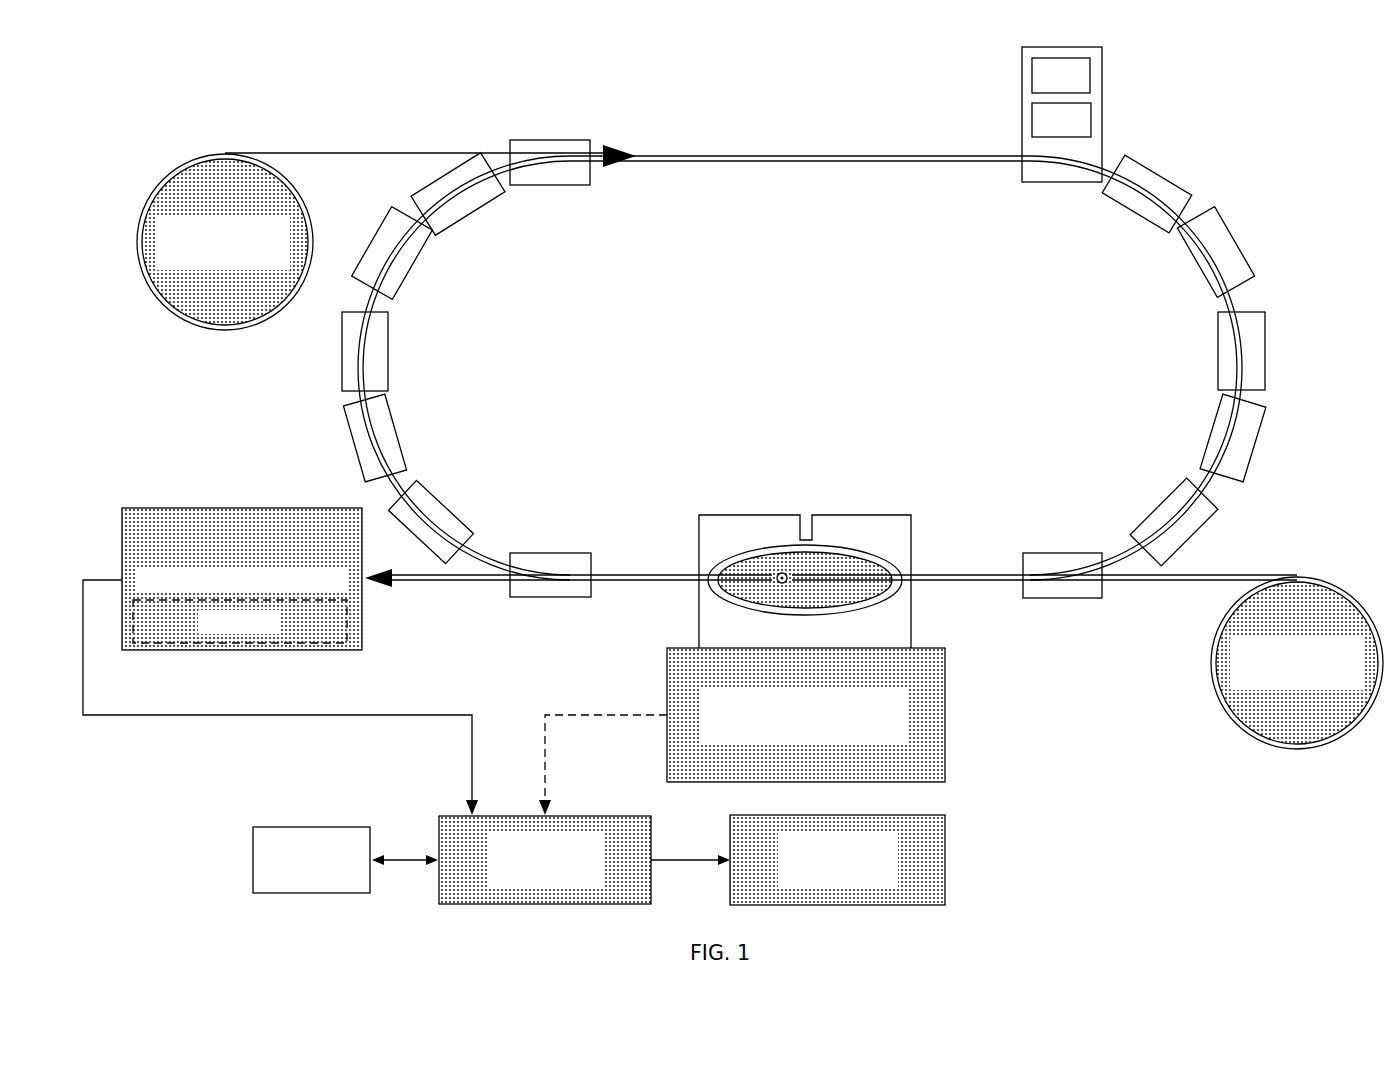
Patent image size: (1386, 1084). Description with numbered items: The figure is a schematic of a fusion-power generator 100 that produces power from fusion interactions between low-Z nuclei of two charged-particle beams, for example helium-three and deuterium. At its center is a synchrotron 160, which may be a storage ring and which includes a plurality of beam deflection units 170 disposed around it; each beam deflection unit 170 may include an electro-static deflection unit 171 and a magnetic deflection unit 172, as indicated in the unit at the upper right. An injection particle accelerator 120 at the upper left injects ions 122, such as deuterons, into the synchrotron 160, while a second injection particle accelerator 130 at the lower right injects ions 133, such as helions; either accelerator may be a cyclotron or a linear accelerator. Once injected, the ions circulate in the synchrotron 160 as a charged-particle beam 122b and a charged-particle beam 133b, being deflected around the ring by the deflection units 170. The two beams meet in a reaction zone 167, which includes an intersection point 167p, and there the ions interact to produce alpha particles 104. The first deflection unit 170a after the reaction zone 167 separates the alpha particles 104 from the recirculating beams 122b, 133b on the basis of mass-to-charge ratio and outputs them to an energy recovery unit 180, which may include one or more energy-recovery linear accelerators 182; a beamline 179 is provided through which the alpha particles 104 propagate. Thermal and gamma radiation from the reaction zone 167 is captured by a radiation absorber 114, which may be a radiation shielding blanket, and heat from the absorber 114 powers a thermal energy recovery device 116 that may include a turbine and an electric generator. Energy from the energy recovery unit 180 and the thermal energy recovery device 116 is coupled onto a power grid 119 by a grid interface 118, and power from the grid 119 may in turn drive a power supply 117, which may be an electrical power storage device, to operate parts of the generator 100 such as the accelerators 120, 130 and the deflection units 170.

The fusion-power generator 100 is at (233, 122).
The injection particle accelerator 120 is at (225, 242).
The ions 122 is at (368, 148).
The synchrotron 160 is at (639, 124).
The charged-particle beam 122b is at (806, 148).
The charged-particle beam 133b is at (1000, 565).
The ions 133 is at (1214, 570).
The alpha particles 104 is at (404, 598).
The injection particle accelerator 130 is at (1297, 663).
The beam deflection unit 170 is at (548, 187).
The first deflection unit 170a is at (540, 598).
The beamline 179 is at (495, 588).
The electro-static deflection unit 171 is at (1061, 75).
The magnetic deflection unit 172 is at (1061, 120).
The radiation absorber 114 is at (805, 581).
The reaction zone 167 is at (806, 540).
The intersection point 167p is at (787, 574).
The thermal energy recovery device 116 is at (742, 731).
The energy recovery unit 180 is at (280, 661).
The energy-recovery linear accelerator 182 is at (240, 621).
The power grid 119 is at (311, 860).
The grid interface 118 is at (551, 860).
The power supply 117 is at (837, 860).